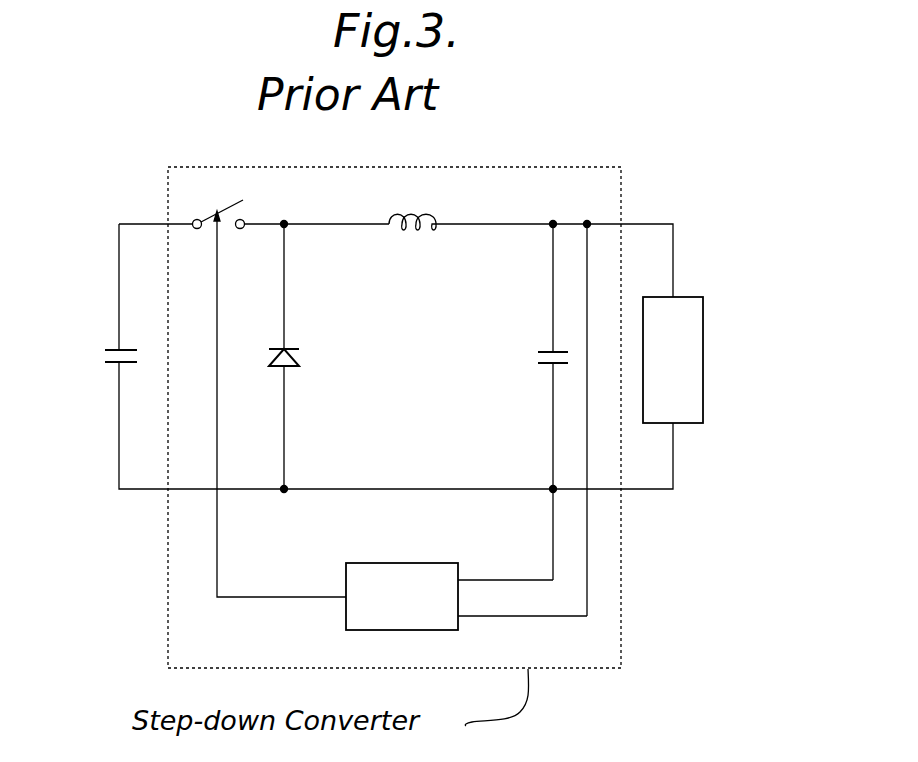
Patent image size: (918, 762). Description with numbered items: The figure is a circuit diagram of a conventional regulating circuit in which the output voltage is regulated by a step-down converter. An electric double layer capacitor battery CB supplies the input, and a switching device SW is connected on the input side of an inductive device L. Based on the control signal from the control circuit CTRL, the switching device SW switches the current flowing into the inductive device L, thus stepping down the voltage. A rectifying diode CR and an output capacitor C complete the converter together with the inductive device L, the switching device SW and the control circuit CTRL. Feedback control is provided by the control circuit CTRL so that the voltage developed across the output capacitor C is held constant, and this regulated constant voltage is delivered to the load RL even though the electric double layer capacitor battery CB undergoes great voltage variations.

The switching device SW is at (240, 206).
The inductive device L is at (416, 247).
The electric double layer capacitor battery CB is at (92, 355).
The rectifying diode CR is at (308, 357).
The output capacitor C is at (534, 359).
The load RL is at (696, 360).
The control circuit CTRL is at (466, 596).